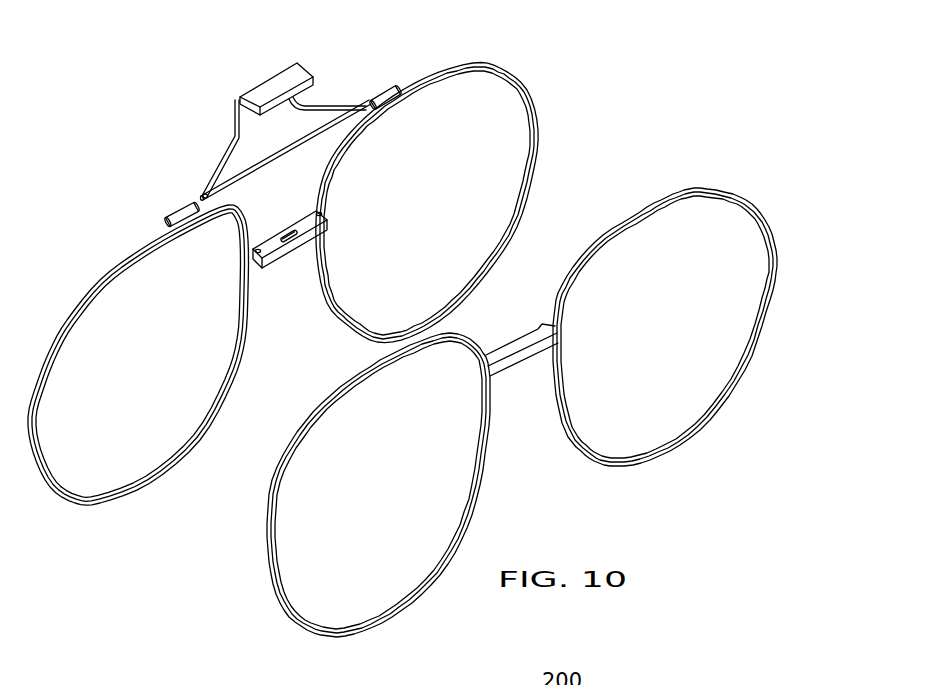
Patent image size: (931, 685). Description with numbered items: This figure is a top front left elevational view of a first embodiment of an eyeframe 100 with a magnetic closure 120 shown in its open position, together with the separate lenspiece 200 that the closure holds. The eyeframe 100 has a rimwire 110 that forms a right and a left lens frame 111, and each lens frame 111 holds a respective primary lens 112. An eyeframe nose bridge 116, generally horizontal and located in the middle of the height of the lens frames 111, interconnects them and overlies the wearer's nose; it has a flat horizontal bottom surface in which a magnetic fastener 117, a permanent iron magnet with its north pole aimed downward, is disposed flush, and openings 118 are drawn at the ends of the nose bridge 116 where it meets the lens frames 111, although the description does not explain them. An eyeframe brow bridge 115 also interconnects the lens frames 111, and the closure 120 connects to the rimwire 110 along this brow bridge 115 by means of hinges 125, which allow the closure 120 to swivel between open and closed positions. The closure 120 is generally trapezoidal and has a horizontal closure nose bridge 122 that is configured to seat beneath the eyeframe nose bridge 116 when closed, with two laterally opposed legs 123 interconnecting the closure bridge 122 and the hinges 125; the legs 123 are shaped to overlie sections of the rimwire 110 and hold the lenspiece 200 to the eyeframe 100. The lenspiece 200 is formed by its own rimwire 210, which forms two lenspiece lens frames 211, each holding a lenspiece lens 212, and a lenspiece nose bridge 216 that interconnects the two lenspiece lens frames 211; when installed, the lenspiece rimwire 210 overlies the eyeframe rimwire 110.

The eyeframe 100 is at (321, 297).
The rimwire 110 is at (304, 299).
The lens frame 111 is at (500, 68).
The primary lens 112 is at (283, 284).
The eyeframe brow bridge 115 is at (271, 158).
The eyeframe nose bridge 116 is at (290, 259).
The magnetic fastener 117 is at (289, 240).
The holes 118 is at (317, 213).
The closure 120 is at (259, 135).
The closure nose bridge 122 is at (243, 90).
The legs 123 is at (222, 162).
The hinges 125 is at (168, 218).
The lenspiece 200 is at (516, 395).
The rimwire 210 is at (516, 417).
The lenspiece lens frame 211 is at (640, 463).
The lenspiece lens 212 is at (768, 182).
The lenspiece nose bridge 216 is at (514, 367).